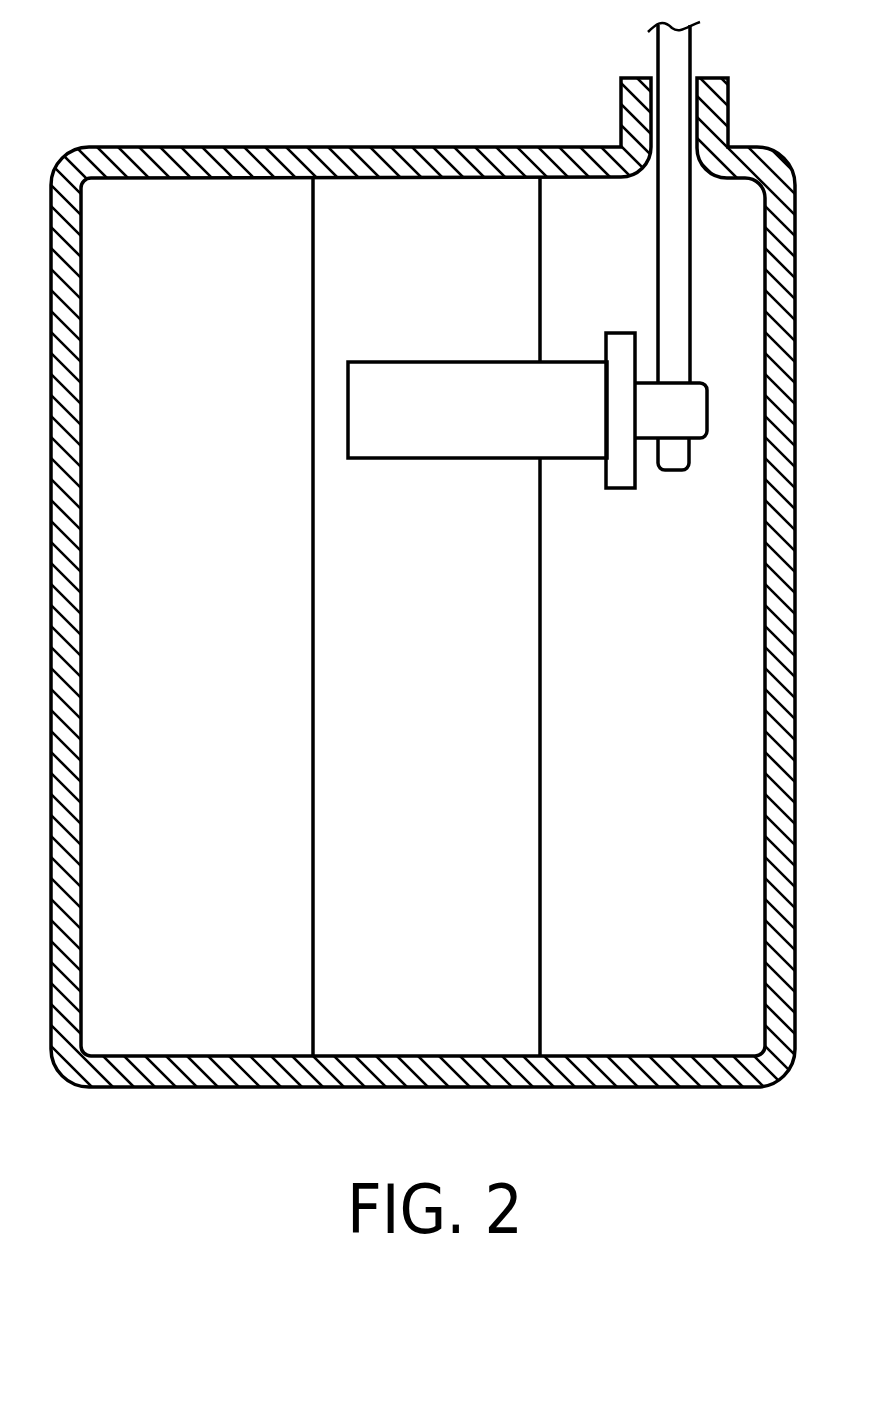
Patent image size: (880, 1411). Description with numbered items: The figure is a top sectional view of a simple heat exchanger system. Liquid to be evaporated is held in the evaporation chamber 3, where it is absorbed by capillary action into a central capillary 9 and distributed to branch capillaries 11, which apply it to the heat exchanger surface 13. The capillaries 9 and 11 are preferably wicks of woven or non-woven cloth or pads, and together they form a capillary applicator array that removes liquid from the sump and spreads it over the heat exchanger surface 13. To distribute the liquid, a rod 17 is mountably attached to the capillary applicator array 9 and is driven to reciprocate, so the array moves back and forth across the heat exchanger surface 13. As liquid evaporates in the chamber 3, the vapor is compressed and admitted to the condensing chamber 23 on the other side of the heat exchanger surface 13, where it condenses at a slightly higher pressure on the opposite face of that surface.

The chamber 3 is at (440, 705).
The central capillary 9 is at (620, 490).
The branch capillaries 11 is at (423, 448).
The heat exchanger surface 13 is at (475, 617).
The rod 17 is at (695, 62).
The condensing chamber 23 is at (247, 617).